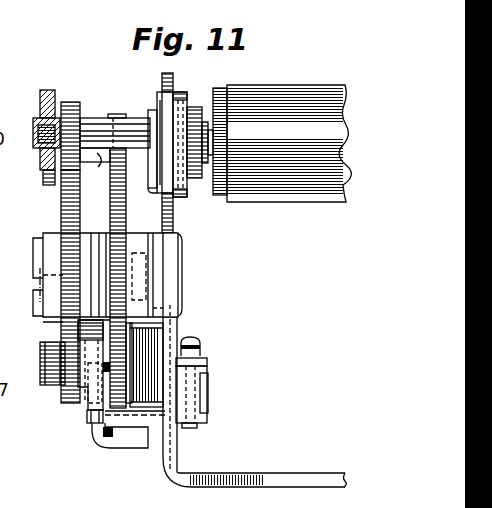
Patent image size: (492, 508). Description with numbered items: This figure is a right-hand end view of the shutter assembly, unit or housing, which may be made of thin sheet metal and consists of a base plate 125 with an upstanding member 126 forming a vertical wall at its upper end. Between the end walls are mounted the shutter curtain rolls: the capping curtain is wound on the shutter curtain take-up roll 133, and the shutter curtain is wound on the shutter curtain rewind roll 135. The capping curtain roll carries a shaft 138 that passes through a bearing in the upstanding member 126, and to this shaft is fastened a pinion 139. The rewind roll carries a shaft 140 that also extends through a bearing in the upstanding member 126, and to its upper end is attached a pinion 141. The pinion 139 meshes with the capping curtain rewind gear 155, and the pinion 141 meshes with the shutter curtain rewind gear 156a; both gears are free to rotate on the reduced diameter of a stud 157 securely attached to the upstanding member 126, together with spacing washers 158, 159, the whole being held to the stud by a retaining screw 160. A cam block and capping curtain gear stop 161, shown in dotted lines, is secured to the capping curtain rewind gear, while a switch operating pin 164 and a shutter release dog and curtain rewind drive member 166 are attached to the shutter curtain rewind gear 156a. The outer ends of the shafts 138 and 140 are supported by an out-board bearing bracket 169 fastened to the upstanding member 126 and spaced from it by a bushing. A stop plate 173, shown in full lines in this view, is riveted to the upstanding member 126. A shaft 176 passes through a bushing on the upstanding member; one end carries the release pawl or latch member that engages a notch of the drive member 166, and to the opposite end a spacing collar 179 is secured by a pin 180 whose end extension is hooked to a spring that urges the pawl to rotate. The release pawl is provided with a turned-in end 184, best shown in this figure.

The base plate 125 is at (265, 478).
The upstanding member 126 is at (178, 448).
The shutter curtain take-up roll 133 is at (272, 190).
The shutter curtain rewind roll 135 is at (263, 92).
The shaft 138 is at (110, 173).
The pinion 139 is at (110, 204).
The shaft 140 is at (96, 120).
The pinion 141 is at (71, 104).
The capping curtain rewind gear 155 is at (118, 222).
The shutter curtain rewind gear 156a is at (64, 203).
The stud 157 is at (185, 303).
The spacing washer 158 is at (153, 260).
The spacing washer 159 is at (100, 292).
The retaining screw 160 is at (41, 257).
The cam block and capping curtain gear stop 161 is at (172, 278).
The switch operating pin 164 is at (50, 372).
The shutter release dog and curtain rewind drive member 166 is at (83, 367).
The out-board bearing bracket 169 is at (47, 92).
The stop plate 173 is at (148, 338).
The shaft 176 is at (208, 400).
The spacing collar 179 is at (88, 416).
The pin 180 is at (200, 357).
The turned-in end 184 is at (122, 443).